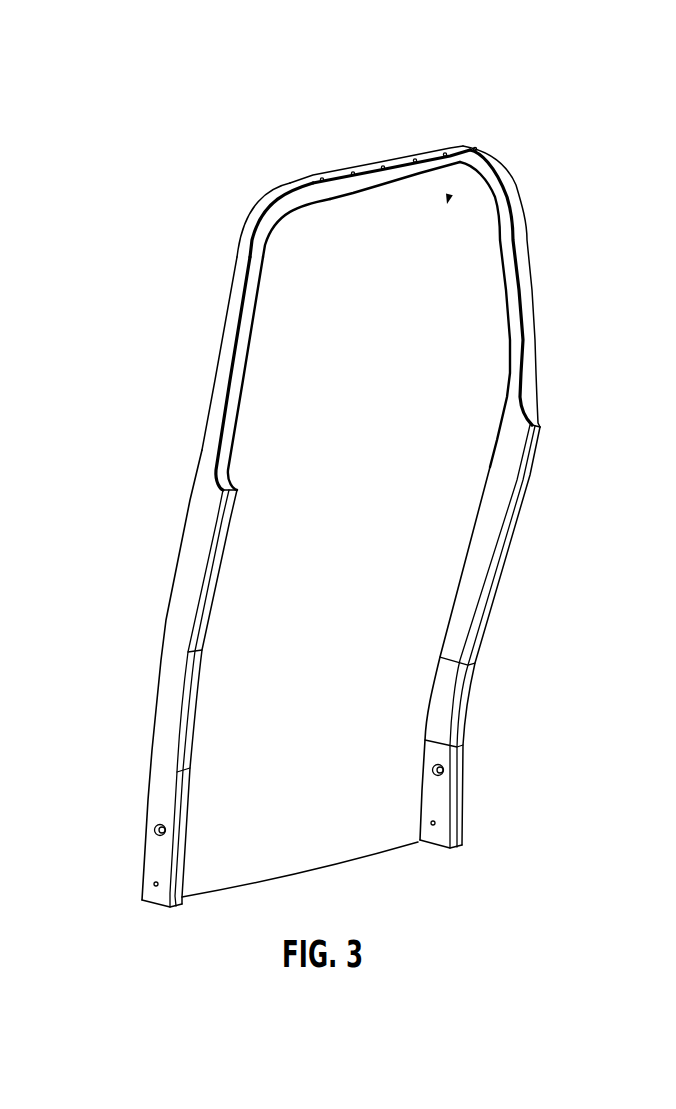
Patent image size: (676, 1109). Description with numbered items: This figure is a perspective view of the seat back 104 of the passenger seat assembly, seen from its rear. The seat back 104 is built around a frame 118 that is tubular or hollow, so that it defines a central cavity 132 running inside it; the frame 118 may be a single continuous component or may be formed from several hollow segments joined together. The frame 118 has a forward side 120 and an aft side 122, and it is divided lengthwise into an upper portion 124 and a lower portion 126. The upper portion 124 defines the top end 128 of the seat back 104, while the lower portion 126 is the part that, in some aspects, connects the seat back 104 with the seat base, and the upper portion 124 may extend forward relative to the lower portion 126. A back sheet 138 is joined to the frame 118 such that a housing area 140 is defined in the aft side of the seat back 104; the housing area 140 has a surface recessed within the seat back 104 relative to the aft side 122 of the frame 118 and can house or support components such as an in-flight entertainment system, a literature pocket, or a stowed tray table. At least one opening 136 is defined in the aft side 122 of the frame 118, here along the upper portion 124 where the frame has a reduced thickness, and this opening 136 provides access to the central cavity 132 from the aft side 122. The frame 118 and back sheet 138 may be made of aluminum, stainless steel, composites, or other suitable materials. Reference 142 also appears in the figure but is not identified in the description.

The seat back 104 is at (120, 152).
The frame 118 is at (178, 607).
The forward side 120 is at (185, 532).
The aft side 122 is at (518, 518).
The upper portion 124 is at (215, 387).
The lower portion 126 is at (160, 703).
The top end 128 is at (400, 155).
The central cavity 132 is at (523, 268).
The opening 136 is at (256, 242).
The back sheet 138 is at (380, 207).
The housing area 140 is at (450, 192).
The inner edge 142 is at (327, 220).